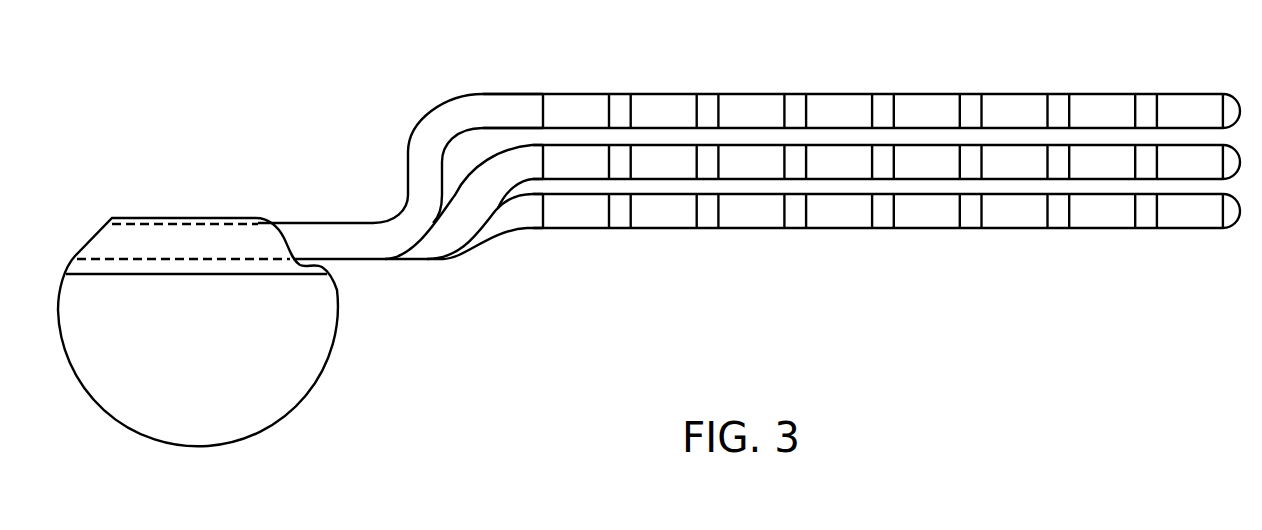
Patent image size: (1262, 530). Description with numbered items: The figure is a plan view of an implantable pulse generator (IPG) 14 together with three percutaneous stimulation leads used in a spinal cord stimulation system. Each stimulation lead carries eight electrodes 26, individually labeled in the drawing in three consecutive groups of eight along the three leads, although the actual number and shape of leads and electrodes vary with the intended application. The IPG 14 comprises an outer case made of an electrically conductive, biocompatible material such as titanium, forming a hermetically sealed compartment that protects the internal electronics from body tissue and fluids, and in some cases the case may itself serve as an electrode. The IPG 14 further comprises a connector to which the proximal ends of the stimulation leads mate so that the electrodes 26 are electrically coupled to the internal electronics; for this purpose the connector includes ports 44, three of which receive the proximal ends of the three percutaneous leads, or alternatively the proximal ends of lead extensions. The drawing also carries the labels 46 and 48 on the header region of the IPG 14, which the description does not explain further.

The implantable pulse generator 14 is at (118, 178).
The electrodes 26 is at (750, 93).
The ports 44 is at (325, 330).
The connector / header 46 is at (136, 217).
The lead receptacle port 48 is at (205, 238).